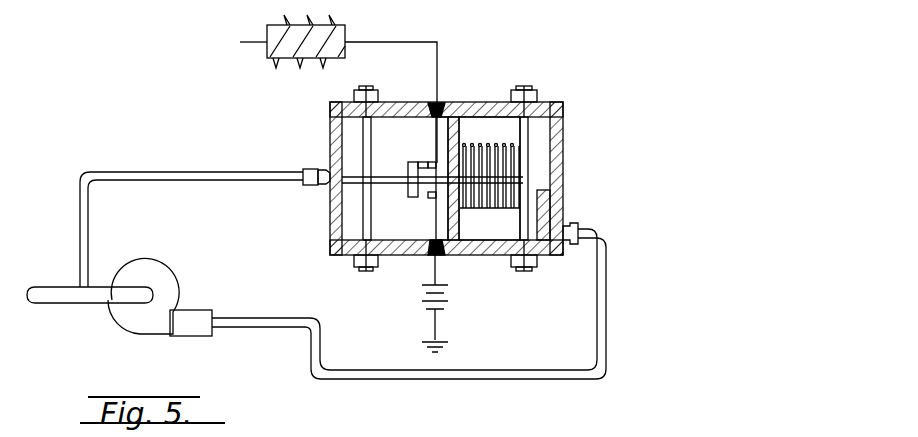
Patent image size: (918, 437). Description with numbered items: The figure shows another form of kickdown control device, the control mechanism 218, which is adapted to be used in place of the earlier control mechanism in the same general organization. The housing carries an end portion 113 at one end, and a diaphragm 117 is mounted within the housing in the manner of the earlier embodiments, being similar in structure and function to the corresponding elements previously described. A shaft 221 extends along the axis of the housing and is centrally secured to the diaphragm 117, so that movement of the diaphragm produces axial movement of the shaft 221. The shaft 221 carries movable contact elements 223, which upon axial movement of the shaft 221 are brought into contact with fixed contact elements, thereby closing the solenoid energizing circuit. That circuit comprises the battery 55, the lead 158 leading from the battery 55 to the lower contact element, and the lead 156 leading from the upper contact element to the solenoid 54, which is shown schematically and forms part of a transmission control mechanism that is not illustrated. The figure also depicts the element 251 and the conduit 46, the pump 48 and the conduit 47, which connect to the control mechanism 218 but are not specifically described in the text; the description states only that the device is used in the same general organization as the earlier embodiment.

The solenoid 54 is at (352, 26).
The lead 156 is at (440, 70).
The diaphragm 117 is at (365, 192).
The shaft 221 is at (392, 175).
The movable contact elements 223 is at (395, 185).
The heating element 251 is at (456, 162).
The end portion 113 is at (462, 196).
The lead 158 is at (440, 222).
The battery 55 is at (425, 297).
The inlet conduit 46 is at (197, 181).
The pump 48 is at (182, 336).
The return conduit 47 is at (498, 378).
The control mechanism 218 is at (580, 214).